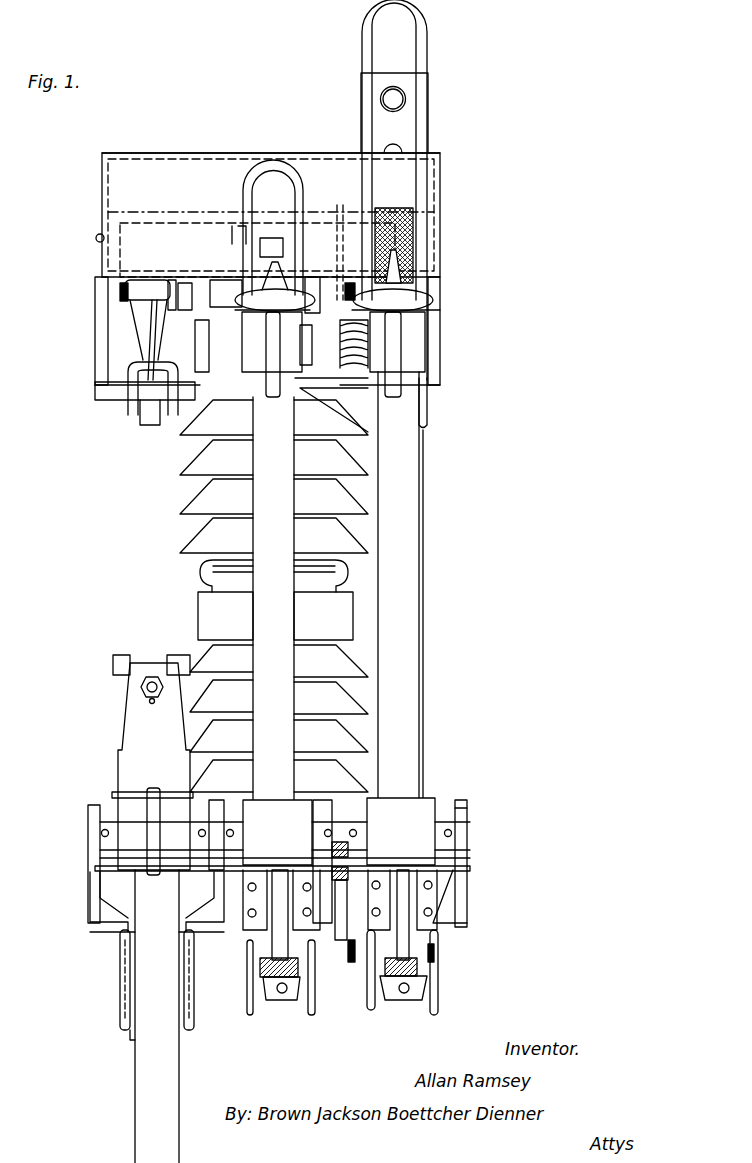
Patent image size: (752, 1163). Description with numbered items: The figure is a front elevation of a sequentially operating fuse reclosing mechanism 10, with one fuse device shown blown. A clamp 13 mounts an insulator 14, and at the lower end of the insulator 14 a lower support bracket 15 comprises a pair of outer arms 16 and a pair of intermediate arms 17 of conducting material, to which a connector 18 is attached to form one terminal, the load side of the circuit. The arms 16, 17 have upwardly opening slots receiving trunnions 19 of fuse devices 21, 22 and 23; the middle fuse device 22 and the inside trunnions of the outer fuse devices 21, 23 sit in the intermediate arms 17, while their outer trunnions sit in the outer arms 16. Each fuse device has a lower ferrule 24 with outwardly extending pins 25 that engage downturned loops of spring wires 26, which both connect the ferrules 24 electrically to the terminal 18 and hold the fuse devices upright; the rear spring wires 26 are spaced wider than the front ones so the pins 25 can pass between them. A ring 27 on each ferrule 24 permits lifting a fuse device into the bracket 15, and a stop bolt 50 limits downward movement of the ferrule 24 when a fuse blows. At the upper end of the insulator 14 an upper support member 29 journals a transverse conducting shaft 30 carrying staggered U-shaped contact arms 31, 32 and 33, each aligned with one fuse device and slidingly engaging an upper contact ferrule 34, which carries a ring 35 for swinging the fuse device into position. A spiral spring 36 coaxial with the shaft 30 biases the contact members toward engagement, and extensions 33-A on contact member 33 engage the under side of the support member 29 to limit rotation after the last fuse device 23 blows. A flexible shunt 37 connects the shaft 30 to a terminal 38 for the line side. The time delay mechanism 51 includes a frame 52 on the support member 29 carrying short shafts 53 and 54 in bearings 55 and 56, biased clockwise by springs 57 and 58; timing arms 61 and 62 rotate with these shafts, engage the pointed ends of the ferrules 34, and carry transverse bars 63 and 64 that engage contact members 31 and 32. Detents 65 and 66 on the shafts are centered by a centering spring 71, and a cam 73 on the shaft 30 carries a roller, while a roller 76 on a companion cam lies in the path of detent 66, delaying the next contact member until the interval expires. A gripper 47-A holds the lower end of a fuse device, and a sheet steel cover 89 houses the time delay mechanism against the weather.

The sequentially operating fuse reclosing mechanism 10 is at (477, 194).
The clamp 13 is at (205, 604).
The insulator 14 is at (205, 498).
The lower support bracket 15 is at (490, 896).
The outer arms 16 is at (92, 808).
The intermediate arms 17 is at (214, 918).
The connector 18 is at (128, 1036).
The trunnions 19 is at (100, 828).
The fuse device 21 is at (134, 1083).
The fuse device 22 is at (256, 533).
The fuse device 23 is at (408, 543).
The ferrule 24 is at (335, 930).
The pins 25 is at (208, 350).
The spring wires 26 is at (120, 970).
The ring 27 is at (325, 372).
The upper support member 29 is at (428, 355).
The transverse shaft 30 is at (125, 342).
The contact arm 31 is at (123, 410).
The contact arm 32 is at (284, 165).
The contact arm 33 is at (418, 30).
The extensions 33-A is at (428, 405).
The contact ferrule 34 is at (434, 305).
The ring 35 is at (402, 345).
The spiral spring 36 is at (381, 350).
The flexible shunt 37 is at (416, 232).
The terminal 38 is at (430, 100).
The clamp gripper 47-A is at (284, 1000).
The stop bolt 50 is at (140, 688).
The time delay mechanism 51 is at (82, 194).
The frame 52 is at (148, 212).
The short shaft 53 is at (212, 284).
The short shaft 54 is at (291, 300).
The bearing 55 is at (275, 286).
The bearing 56 is at (349, 284).
The spring 57 is at (120, 290).
The spring 58 is at (393, 300).
The timing arm 61 is at (150, 340).
The timing arm 62 is at (284, 250).
The transverse bar 63 is at (105, 393).
The transverse bar 64 is at (234, 233).
The detent 65 is at (186, 283).
The detent 66 is at (308, 277).
The centering spring 71 is at (172, 282).
The cam 73 is at (242, 366).
The roller 76 is at (297, 345).
The cover 89 is at (232, 151).